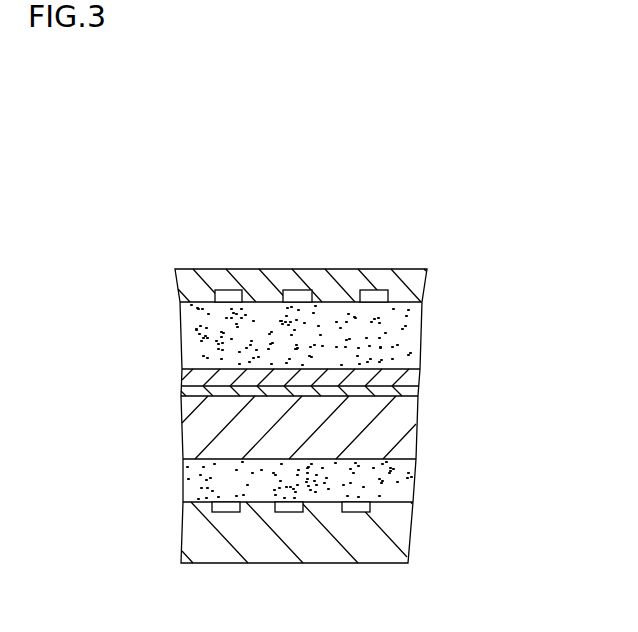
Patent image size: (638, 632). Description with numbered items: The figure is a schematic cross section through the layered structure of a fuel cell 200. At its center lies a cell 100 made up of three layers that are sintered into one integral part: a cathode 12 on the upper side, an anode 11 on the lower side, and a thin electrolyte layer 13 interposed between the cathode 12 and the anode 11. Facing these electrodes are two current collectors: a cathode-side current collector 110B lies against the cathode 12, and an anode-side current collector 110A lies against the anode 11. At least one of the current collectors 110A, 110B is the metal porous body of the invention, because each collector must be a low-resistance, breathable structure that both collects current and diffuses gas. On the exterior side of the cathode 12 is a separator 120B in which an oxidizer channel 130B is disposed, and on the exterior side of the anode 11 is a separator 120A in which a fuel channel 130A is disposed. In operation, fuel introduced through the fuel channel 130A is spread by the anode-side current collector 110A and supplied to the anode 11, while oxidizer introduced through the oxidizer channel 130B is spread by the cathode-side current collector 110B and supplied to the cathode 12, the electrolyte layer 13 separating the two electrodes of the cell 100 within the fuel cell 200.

The fuel cell 200 is at (385, 211).
The cell 100 is at (353, 407).
The anode 11 is at (327, 427).
The cathode 12 is at (405, 381).
The electrolyte layer 13 is at (405, 391).
The anode-side current collector 110A is at (192, 485).
The cathode-side current collector 110B is at (193, 342).
The separator 120A is at (192, 537).
The separator 120B is at (188, 285).
The fuel channel 130A is at (358, 512).
The oxidizer channel 130B is at (378, 292).